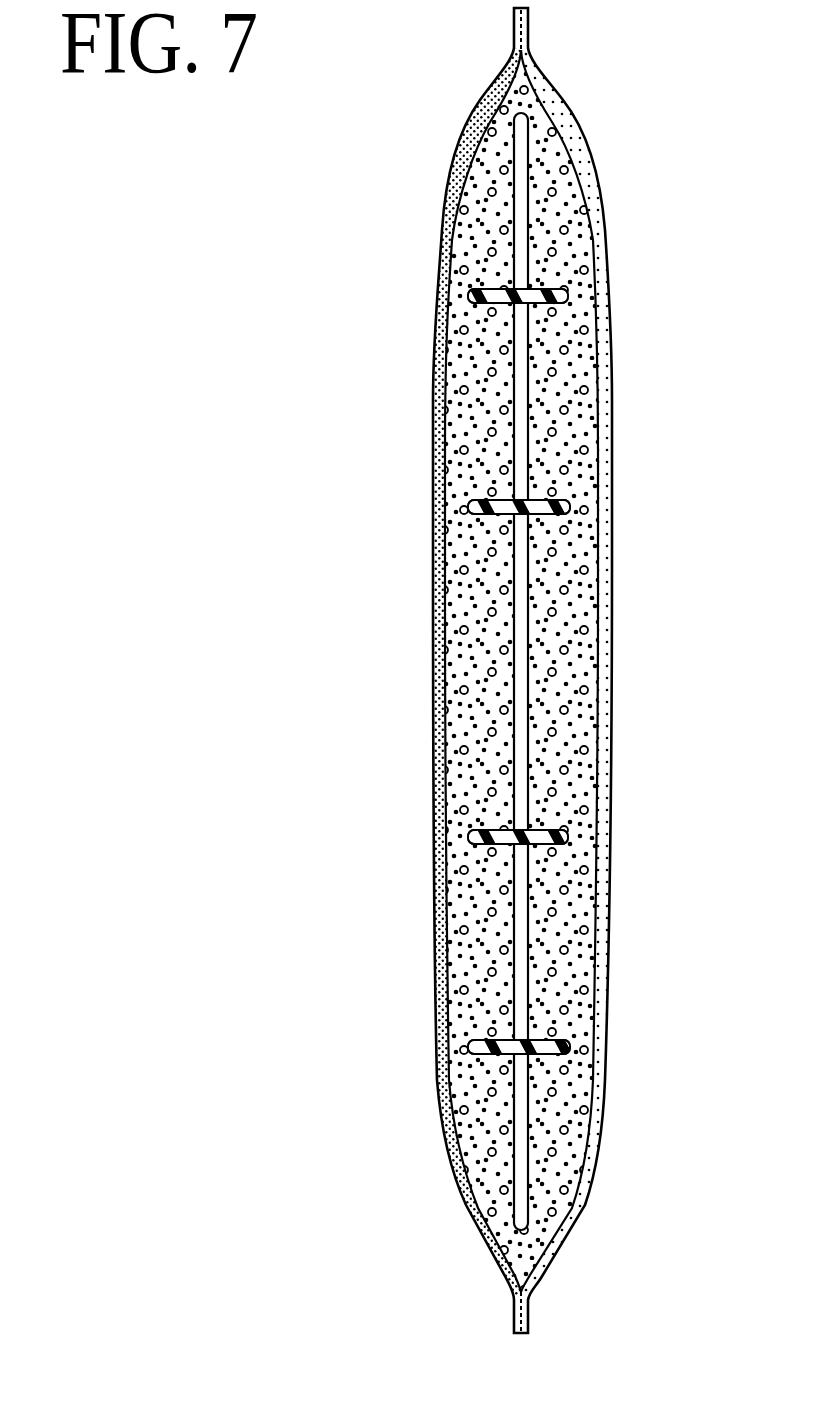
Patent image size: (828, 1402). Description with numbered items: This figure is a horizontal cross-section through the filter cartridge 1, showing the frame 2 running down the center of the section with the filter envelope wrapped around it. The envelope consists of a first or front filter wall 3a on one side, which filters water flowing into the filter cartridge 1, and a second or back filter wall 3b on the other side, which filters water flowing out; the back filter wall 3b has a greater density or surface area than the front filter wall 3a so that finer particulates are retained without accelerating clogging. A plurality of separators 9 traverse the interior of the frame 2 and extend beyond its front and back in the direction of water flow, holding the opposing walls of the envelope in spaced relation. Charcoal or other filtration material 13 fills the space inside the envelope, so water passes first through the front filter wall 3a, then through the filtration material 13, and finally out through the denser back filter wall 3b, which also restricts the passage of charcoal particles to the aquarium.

The filter cartridge 1 is at (205, 1093).
The frame 2 is at (537, 237).
The first or front filter wall 3a is at (607, 658).
The second or back filter wall 3b is at (437, 592).
The separators 9 is at (570, 512).
The charcoal or other filtration material 13 is at (590, 732).